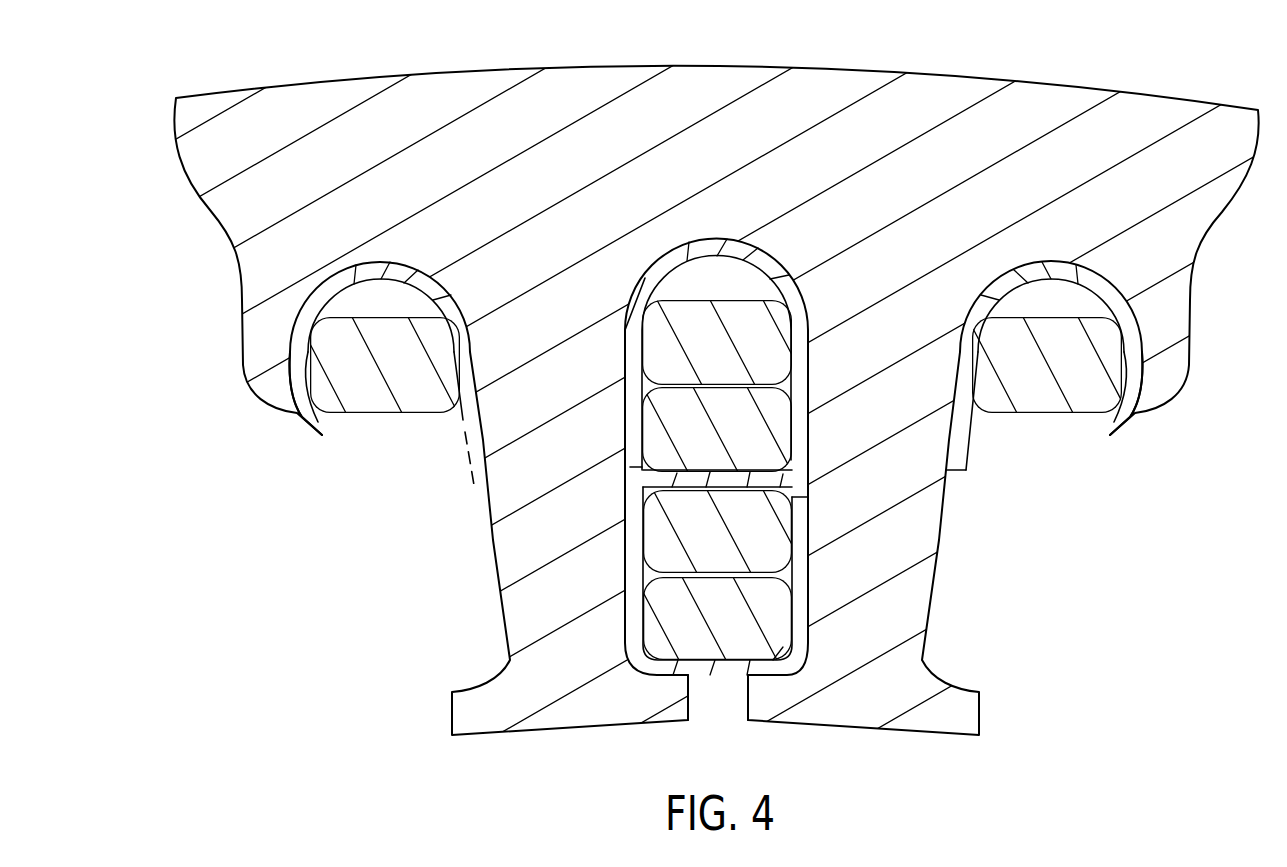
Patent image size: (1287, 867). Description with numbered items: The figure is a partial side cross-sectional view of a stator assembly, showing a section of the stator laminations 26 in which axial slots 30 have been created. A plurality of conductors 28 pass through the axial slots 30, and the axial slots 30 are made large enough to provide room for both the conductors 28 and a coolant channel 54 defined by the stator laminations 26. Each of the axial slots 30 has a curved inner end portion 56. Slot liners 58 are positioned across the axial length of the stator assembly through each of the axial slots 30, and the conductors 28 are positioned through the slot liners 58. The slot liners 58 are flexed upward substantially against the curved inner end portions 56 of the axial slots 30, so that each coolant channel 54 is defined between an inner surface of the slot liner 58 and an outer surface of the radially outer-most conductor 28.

The stator laminations 26 is at (268, 122).
The conductors 28 is at (657, 447).
The axial slots 30 is at (288, 311).
The coolant channel 54 is at (391, 303).
The curved inner end portion 56 is at (379, 262).
The slot liners 58 is at (960, 458).